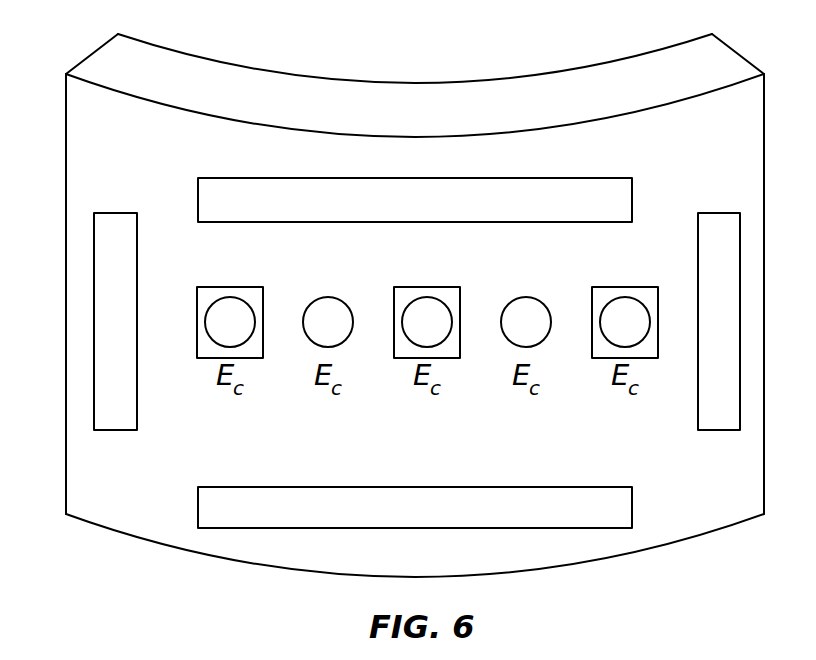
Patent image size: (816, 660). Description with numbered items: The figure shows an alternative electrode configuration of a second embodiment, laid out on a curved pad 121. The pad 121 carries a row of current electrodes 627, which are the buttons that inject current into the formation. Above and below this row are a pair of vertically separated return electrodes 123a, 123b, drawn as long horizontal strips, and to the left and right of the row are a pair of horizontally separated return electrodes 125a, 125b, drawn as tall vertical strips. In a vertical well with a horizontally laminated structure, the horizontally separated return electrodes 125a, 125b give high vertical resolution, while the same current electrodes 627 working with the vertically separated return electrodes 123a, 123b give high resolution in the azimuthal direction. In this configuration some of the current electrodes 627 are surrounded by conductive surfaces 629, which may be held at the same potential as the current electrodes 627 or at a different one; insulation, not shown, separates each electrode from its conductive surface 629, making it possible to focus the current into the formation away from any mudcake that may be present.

The pad 121 is at (107, 42).
The vertically separated return electrode 123a is at (476, 178).
The vertically separated return electrode 123b is at (547, 487).
The horizontally separated return electrode 125a is at (100, 213).
The horizontally separated return electrode 125b is at (718, 213).
The current electrode 627 is at (409, 305).
The conductive surface 629 is at (428, 288).